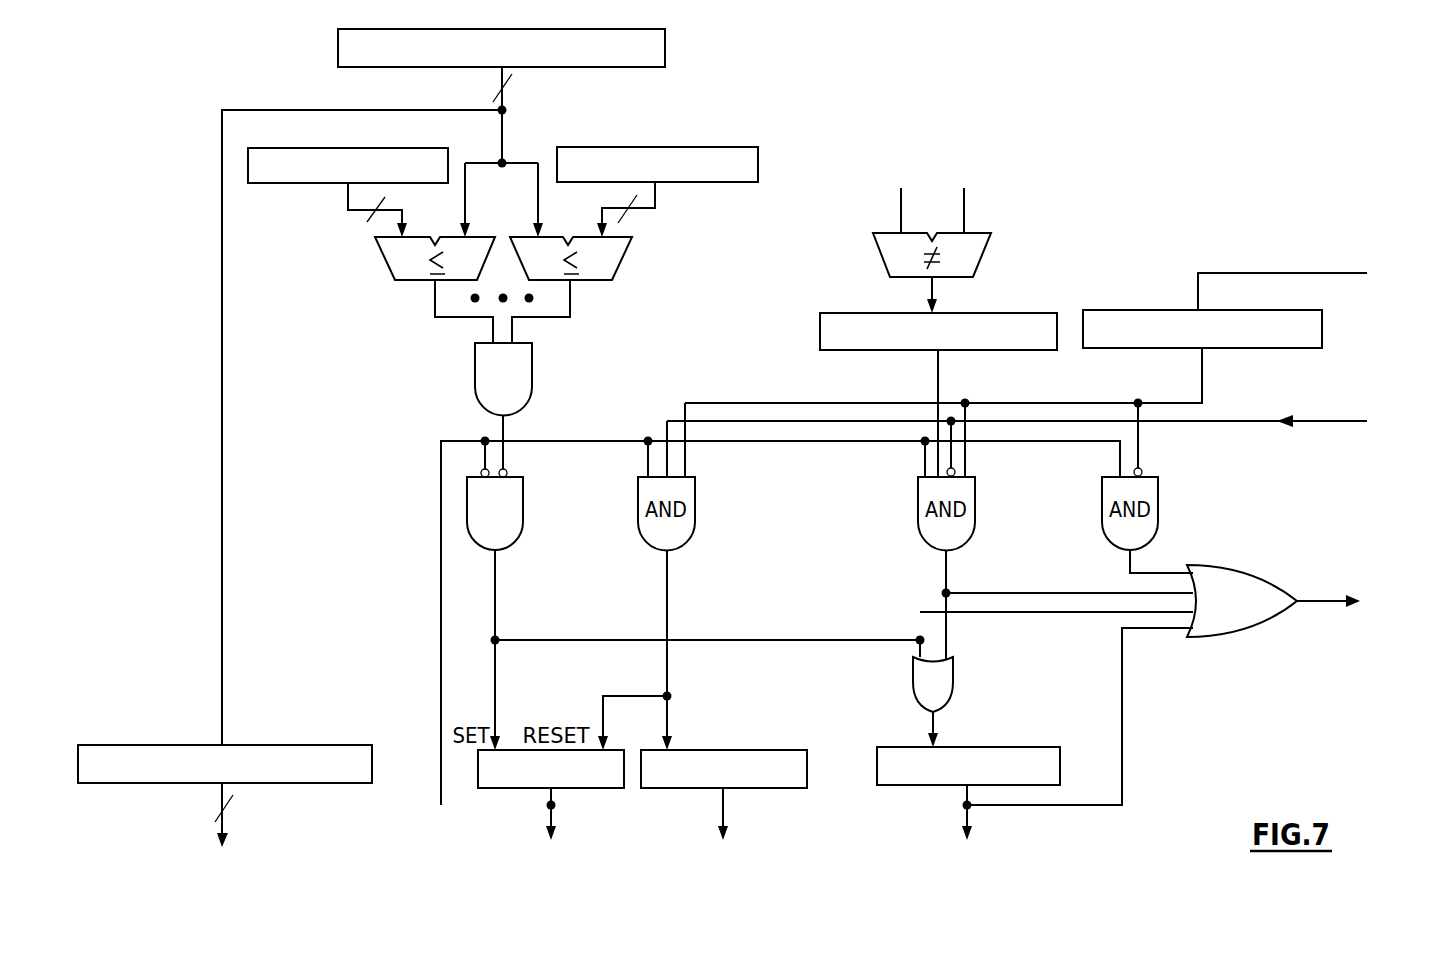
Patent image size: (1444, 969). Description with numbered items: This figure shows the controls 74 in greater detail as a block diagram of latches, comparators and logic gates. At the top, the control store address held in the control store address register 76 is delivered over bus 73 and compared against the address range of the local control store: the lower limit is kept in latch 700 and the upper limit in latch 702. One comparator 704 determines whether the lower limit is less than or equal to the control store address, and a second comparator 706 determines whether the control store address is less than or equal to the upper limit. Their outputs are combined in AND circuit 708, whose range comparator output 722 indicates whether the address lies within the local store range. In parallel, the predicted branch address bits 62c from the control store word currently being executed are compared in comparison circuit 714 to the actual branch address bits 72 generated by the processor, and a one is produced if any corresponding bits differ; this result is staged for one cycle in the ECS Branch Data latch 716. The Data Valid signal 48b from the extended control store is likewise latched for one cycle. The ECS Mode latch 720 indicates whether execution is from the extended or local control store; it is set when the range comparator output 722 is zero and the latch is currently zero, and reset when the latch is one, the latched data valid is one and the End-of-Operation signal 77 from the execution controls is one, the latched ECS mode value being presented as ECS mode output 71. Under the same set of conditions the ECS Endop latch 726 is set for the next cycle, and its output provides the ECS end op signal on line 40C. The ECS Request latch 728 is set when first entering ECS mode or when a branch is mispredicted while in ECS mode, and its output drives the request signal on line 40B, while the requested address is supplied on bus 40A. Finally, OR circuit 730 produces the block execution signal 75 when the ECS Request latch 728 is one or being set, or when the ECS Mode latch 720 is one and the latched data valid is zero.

The control store address register 76 is at (608, 67).
The central store address bus 73 is at (500, 100).
The lower limit latch 700 is at (310, 184).
The upper limit latch 702 is at (665, 147).
The comparator 704 is at (412, 282).
The second comparator 706 is at (582, 282).
The AND circuit 708 is at (532, 371).
The range comparator output 722 is at (504, 435).
The actual branch address bits 72 is at (900, 215).
The predicted branch address bits 62c is at (965, 214).
The comparison circuit 714 is at (880, 255).
The ECS Branch Data latch 716 is at (1000, 313).
The Data Valid signal 48b is at (1198, 272).
The controls 74 is at (1170, 147).
The End-of-Operation signal 77 is at (1200, 425).
The OR circuit 730 is at (1203, 560).
The block execution signal 75 is at (1310, 603).
The ECS Request latch 728 is at (975, 747).
The ECS Endop latch 726 is at (720, 750).
The ECS Mode latch 720 is at (585, 788).
The bus 40A is at (225, 826).
The ECS mode output 71 is at (552, 875).
The line 40C is at (723, 875).
The line 40B is at (967, 875).